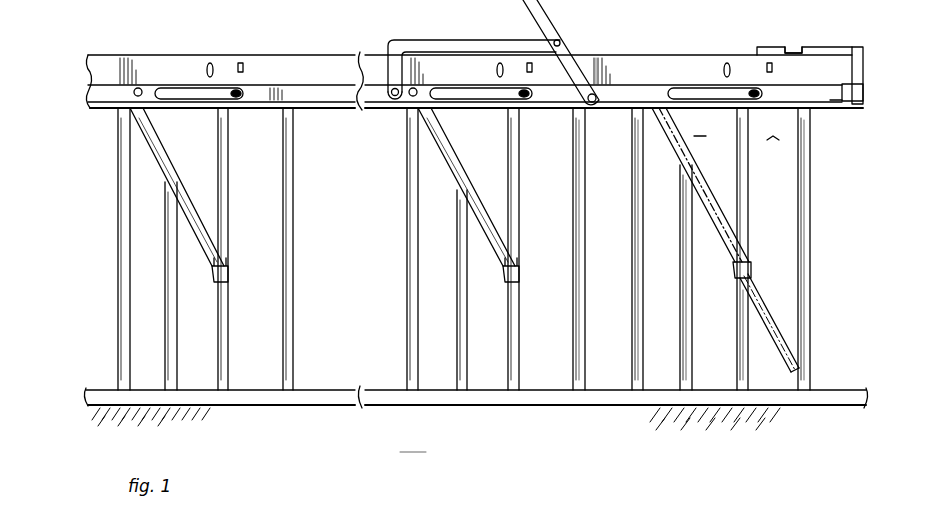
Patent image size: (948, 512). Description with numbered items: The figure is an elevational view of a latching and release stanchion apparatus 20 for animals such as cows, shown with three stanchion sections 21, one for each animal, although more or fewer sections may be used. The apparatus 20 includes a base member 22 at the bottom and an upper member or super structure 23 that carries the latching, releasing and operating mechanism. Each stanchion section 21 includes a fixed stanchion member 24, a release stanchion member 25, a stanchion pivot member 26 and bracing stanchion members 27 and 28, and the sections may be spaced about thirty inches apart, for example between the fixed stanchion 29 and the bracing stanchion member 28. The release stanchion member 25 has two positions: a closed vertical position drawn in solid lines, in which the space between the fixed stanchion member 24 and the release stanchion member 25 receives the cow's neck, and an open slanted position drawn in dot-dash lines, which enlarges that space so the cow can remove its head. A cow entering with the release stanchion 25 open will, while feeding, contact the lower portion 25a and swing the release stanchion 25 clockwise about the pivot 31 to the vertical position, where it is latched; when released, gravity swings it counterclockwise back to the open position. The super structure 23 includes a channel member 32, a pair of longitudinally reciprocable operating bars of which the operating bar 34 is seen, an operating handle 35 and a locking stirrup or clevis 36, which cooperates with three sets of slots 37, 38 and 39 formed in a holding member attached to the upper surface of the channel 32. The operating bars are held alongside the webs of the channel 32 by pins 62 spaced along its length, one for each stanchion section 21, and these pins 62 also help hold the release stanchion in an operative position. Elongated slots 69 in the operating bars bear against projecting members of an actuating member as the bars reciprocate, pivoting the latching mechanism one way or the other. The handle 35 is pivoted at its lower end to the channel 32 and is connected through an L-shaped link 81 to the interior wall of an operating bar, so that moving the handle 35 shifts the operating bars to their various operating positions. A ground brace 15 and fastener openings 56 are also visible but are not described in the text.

The diagonal brace 15 is at (230, 262).
The stanchion apparatus 20 is at (426, 452).
The stanchion sections 21 is at (294, 207).
The base member 22 is at (612, 405).
The upper member or super structure 23 is at (278, 55).
The fixed stanchion member 24 is at (812, 164).
The release stanchion member 25 is at (698, 165).
The lower portion 25a is at (770, 310).
The stanchion pivot member 26 is at (720, 331).
The bracing stanchion member 27 is at (680, 288).
The bracing stanchion member 28 is at (644, 228).
The fixed stanchion 29 is at (586, 230).
The pivot 31 is at (232, 276).
The channel member 32 is at (598, 68).
The operating bar 34 is at (856, 103).
The operating handle 35 is at (580, 24).
The locking stirrup or clevis 36 is at (866, 62).
The slots 37 is at (786, 47).
The slots 38 is at (806, 47).
The slots 39 is at (862, 47).
The fastener holes 56 is at (212, 62).
The pins 62 is at (141, 88).
The elongated slot 69 is at (672, 86).
The L-shaped link 81 is at (424, 40).